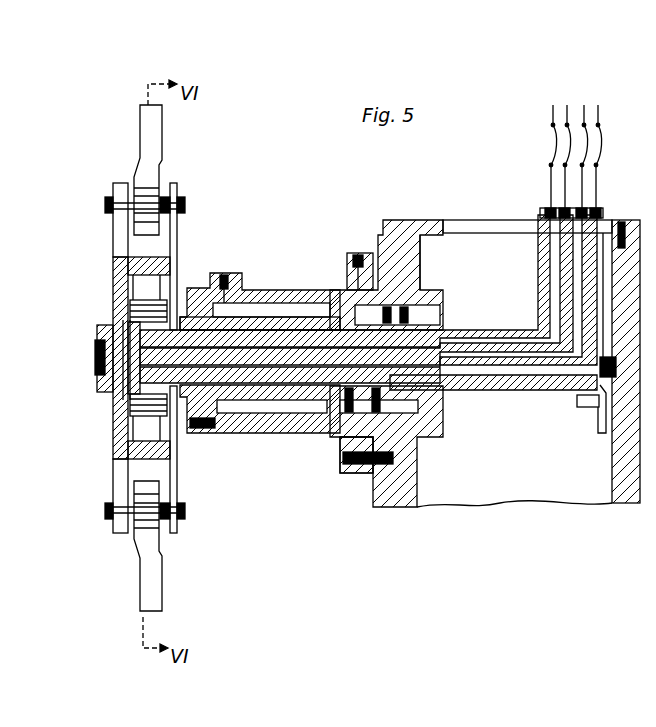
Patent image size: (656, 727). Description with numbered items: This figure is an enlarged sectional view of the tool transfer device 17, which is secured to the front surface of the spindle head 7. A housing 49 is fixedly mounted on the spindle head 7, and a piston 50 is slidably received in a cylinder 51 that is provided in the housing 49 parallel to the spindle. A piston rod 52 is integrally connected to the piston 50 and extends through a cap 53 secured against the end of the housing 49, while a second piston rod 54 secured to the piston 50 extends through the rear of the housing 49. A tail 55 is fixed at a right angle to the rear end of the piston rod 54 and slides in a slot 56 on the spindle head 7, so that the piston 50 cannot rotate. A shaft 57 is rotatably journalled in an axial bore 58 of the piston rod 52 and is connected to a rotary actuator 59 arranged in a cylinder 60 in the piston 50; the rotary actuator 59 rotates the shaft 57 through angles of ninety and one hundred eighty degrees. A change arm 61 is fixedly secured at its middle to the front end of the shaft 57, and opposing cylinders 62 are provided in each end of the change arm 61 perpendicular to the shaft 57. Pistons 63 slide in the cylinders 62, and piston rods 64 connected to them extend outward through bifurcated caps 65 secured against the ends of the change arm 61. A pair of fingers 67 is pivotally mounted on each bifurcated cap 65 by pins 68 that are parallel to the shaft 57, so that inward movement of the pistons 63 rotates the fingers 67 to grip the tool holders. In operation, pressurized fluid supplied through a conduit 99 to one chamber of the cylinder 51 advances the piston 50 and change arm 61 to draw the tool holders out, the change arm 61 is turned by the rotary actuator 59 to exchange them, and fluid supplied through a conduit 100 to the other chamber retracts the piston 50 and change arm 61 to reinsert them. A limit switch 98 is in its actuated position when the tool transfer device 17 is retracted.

The spindle head 7 is at (417, 510).
The tool transfer device 17 is at (182, 172).
The housing 49 is at (280, 328).
The piston 50 is at (330, 300).
The cylinder 51 is at (258, 292).
The piston rod 52 is at (303, 320).
The cap 53 is at (190, 285).
The piston rod 54 is at (468, 325).
The tail 55 is at (556, 182).
The slot 56 is at (533, 156).
The shaft 57 is at (295, 382).
The axial bore 58 is at (257, 382).
The rotary actuator 59 is at (332, 407).
The cylinder 60 is at (350, 397).
The change arm 61 is at (115, 290).
The cylinders 62 is at (125, 285).
The pistons 63 is at (125, 318).
The piston rods 64 is at (142, 267).
The bifurcated caps 65 is at (120, 230).
The fingers 67 is at (147, 128).
The pins 68 is at (108, 203).
The limit switch 98 is at (583, 420).
The conduit 99 is at (358, 252).
The conduit 100 is at (222, 272).